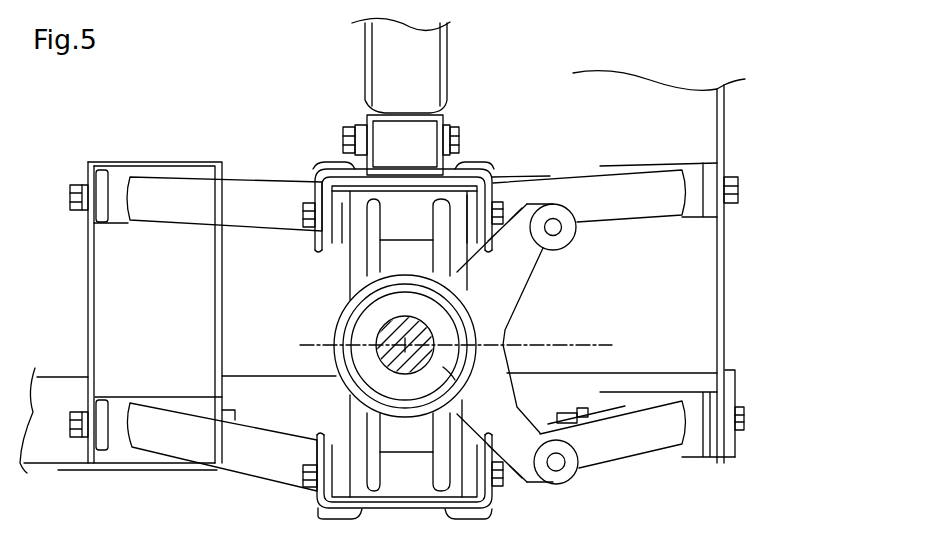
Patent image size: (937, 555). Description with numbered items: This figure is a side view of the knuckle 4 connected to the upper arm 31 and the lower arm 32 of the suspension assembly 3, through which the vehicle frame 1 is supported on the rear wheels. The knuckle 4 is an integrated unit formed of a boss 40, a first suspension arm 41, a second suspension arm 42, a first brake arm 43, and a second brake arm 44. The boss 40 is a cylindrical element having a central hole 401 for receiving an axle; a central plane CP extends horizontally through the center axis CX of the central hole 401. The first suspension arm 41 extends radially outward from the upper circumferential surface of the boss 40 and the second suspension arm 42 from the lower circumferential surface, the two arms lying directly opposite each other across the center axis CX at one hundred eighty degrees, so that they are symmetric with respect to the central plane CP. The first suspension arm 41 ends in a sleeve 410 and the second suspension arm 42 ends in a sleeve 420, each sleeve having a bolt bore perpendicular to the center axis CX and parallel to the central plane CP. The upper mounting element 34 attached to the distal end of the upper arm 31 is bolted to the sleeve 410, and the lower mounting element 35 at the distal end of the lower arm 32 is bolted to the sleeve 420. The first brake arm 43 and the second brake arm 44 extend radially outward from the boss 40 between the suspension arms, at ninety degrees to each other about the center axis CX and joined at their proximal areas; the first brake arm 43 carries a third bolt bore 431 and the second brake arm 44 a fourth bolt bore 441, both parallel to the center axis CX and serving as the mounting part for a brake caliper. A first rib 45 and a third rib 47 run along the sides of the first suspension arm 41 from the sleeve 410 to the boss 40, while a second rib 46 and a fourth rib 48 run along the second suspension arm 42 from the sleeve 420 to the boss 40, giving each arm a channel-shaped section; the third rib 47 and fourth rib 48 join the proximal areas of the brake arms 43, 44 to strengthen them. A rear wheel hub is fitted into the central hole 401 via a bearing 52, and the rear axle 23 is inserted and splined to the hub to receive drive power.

The vehicle frame 1 is at (75, 377).
The suspension assembly 3 is at (212, 114).
The knuckle 4 is at (311, 309).
The rear axle 23 is at (445, 332).
The upper arm 31 is at (245, 185).
The lower arm 32 is at (235, 465).
The upper mounting element 34 is at (343, 185).
The lower mounting element 35 is at (463, 512).
The boss 40 is at (340, 311).
The first suspension arm 41 is at (418, 247).
The second suspension arm 42 is at (408, 444).
The first brake arm 43 is at (522, 279).
The second brake arm 44 is at (510, 400).
The first rib 45 is at (348, 262).
The second rib 46 is at (352, 423).
The third rib 47 is at (463, 239).
The fourth rib 48 is at (463, 463).
The bearing 52 is at (352, 332).
The central hole 401 is at (443, 367).
The sleeve 410 is at (407, 193).
The sleeve 420 is at (358, 502).
The third bolt bore 431 is at (558, 231).
The fourth bolt bore 441 is at (557, 471).
The center axis CX is at (452, 360).
The central plane CP is at (612, 345).